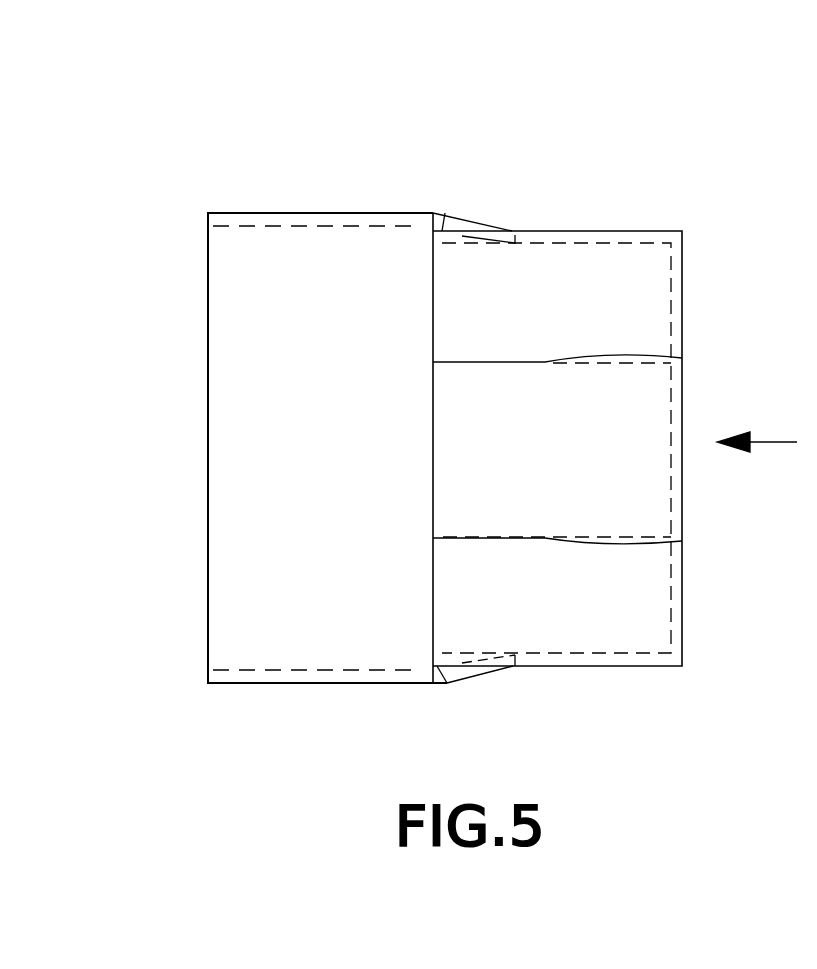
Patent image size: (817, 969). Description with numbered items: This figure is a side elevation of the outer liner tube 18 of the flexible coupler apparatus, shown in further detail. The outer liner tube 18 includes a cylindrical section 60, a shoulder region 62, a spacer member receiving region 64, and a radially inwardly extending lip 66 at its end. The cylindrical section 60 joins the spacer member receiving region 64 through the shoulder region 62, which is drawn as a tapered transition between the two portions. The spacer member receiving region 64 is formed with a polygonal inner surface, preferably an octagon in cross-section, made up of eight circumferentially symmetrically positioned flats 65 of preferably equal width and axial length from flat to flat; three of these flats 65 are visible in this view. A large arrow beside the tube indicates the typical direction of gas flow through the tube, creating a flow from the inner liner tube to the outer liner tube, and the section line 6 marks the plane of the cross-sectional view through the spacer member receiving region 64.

The outer liner tube 18 is at (290, 153).
The cylindrical section 60 is at (251, 438).
The shoulder region 62 is at (474, 703).
The spacer member receiving region 64 is at (620, 482).
The flats 65 is at (548, 312).
The radially inwardly extending lip 66 is at (707, 642).
The section line 6- 6 is at (596, 200).